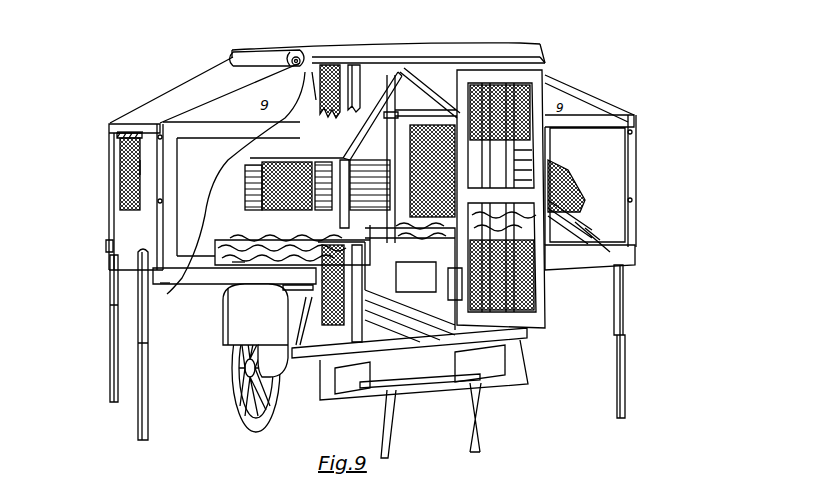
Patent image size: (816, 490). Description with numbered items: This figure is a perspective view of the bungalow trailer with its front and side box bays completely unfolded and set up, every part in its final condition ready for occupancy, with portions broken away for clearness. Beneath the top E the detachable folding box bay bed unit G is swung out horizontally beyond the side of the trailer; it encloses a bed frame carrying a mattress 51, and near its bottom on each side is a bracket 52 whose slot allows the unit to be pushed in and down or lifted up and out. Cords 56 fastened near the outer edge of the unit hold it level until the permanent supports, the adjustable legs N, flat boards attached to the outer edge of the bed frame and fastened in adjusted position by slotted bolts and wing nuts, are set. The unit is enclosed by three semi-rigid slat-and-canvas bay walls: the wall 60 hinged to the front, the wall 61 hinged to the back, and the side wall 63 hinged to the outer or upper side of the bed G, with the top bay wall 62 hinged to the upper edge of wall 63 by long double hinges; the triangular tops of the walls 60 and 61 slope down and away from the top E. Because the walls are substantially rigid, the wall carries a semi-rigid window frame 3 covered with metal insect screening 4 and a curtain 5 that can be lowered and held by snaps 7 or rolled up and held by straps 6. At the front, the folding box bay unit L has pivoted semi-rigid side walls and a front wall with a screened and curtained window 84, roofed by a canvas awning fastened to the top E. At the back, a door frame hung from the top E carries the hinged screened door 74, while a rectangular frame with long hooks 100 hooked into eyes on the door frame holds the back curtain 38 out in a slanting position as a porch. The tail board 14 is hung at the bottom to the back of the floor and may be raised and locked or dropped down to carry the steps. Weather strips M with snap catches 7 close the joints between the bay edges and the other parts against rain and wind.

The top E is at (417, 45).
The weather strips M is at (218, 96).
The top bay wall 62 is at (607, 93).
The side bay wall 63 is at (590, 181).
The window frame 3 is at (125, 185).
The insect screening 4 is at (120, 165).
The curtain 5 is at (120, 138).
The straps 6 is at (130, 132).
The folding box bay bed unit G is at (394, 255).
The screened and curtained window 84 is at (280, 180).
The folding box bay unit L is at (326, 116).
The long hooks 100 is at (320, 84).
The side bay wall 61 is at (432, 171).
The screened door 74 is at (545, 293).
The back curtain 38 is at (548, 67).
The side bay wall 60 is at (590, 181).
The cords 56 is at (594, 236).
The adjustable legs N is at (145, 363).
The snaps 7 is at (166, 284).
The mattress 51 is at (237, 263).
The bracket 52 is at (293, 290).
The tail board 14 is at (410, 393).